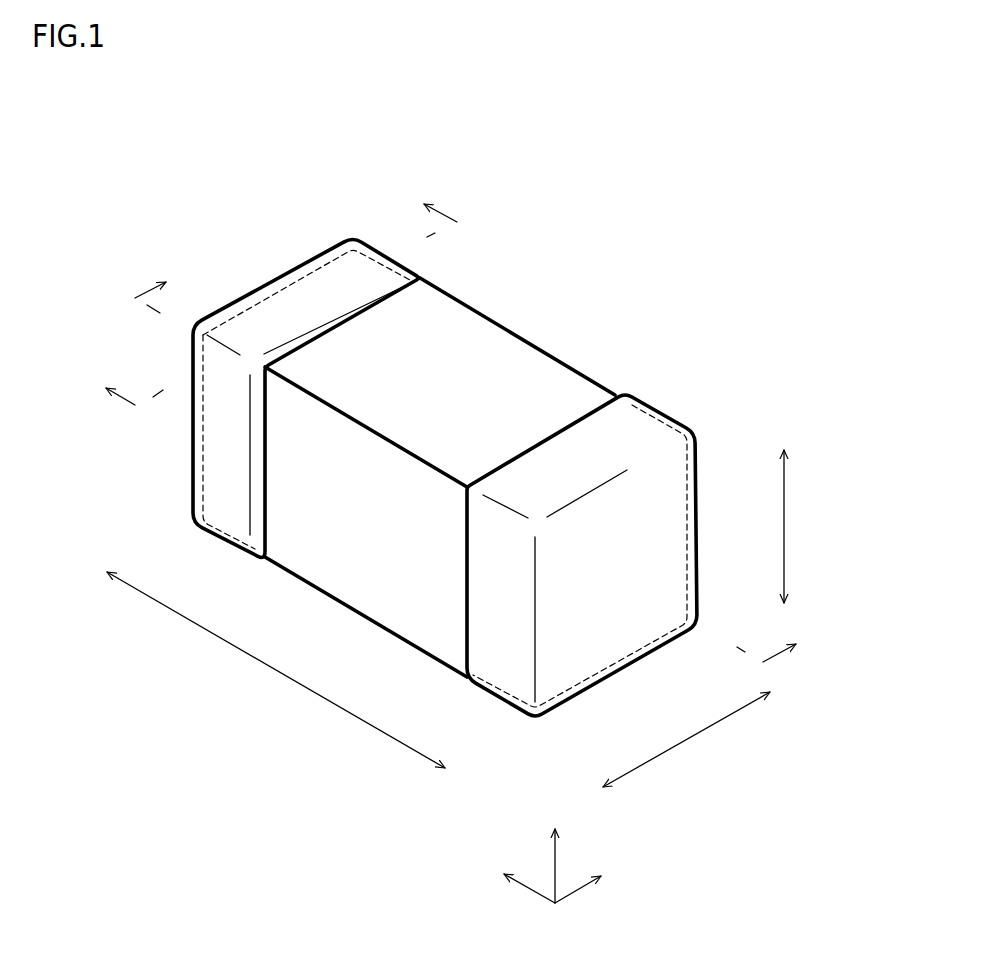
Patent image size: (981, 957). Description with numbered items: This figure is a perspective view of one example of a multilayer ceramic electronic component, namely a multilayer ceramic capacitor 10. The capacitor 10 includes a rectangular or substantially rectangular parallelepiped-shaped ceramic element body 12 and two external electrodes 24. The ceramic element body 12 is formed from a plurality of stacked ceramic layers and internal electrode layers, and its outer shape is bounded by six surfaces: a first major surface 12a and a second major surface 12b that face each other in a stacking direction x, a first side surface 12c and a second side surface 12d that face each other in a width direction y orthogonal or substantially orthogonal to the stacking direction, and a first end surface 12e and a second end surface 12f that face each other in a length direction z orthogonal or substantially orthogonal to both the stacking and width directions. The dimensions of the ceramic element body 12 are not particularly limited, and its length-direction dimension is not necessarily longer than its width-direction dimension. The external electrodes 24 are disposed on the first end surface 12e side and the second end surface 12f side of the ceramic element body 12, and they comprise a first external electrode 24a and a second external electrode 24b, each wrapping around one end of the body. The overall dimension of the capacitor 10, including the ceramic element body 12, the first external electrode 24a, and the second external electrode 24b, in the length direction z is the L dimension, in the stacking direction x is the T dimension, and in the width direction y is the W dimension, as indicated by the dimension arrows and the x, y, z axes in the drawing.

The multilayer ceramic capacitor 10 is at (135, 211).
The ceramic element body 12 is at (565, 366).
The first major surface 12a is at (518, 365).
The second major surface 12b is at (337, 583).
The first side surface 12c is at (400, 602).
The second side surface 12d is at (475, 343).
The first end surface 12e is at (293, 297).
The second end surface 12f is at (655, 522).
The external electrodes 24 is at (299, 834).
The first external electrode 24a is at (372, 235).
The second external electrode 24b is at (659, 406).